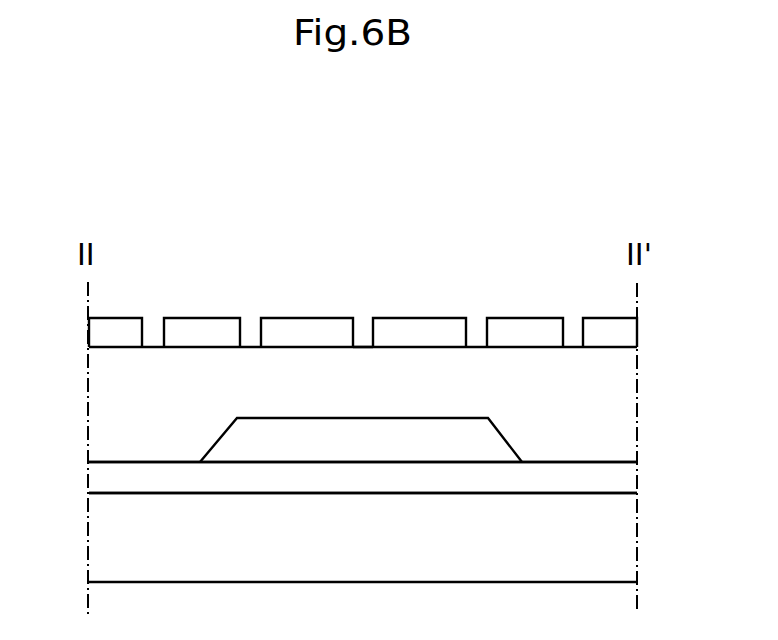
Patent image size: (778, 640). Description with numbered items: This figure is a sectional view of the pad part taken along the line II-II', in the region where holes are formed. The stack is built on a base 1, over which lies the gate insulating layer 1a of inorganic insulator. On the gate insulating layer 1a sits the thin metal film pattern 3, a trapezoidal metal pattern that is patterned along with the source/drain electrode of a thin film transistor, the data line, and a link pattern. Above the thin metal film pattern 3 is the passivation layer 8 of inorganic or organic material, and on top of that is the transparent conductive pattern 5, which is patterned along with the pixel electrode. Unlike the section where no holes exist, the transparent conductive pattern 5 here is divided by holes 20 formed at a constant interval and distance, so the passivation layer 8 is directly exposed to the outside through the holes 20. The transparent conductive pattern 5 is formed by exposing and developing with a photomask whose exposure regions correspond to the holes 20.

The substrate 1 is at (617, 548).
The gate insulating layer 1a is at (618, 479).
The thin metal film pattern 3 is at (235, 441).
The passivation layer 8 is at (605, 410).
The transparent conductive pattern 5 is at (525, 328).
The holes 20 is at (363, 328).